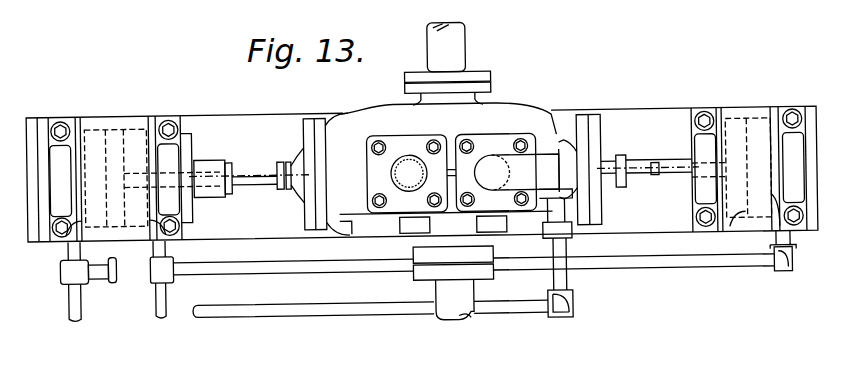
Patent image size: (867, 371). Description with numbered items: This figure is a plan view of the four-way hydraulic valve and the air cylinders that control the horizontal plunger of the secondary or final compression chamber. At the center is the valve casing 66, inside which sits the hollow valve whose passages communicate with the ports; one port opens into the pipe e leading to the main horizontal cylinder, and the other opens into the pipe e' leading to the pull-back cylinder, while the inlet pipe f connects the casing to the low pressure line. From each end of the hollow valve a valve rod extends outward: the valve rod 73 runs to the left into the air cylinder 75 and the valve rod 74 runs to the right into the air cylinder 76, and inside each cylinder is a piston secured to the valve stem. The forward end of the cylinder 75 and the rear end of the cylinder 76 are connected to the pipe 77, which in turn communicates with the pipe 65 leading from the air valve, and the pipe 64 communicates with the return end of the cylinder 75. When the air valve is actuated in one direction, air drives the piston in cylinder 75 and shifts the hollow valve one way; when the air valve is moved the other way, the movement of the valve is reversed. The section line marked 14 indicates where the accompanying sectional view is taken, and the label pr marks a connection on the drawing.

The air cylinder 75 is at (117, 141).
The air cylinder 76 is at (758, 134).
The valve rod 73 is at (270, 170).
The valve rod 74 is at (667, 174).
The ram 14 is at (257, 180).
The pipe 65 is at (517, 124).
The valve casing 66 is at (445, 174).
The pipe 77 is at (350, 271).
The pipe 64 is at (78, 303).
The inlet pipe f is at (455, 299).
The pressure connection pr is at (457, 326).
The pipe e is at (516, 172).
The pipe e' is at (409, 173).